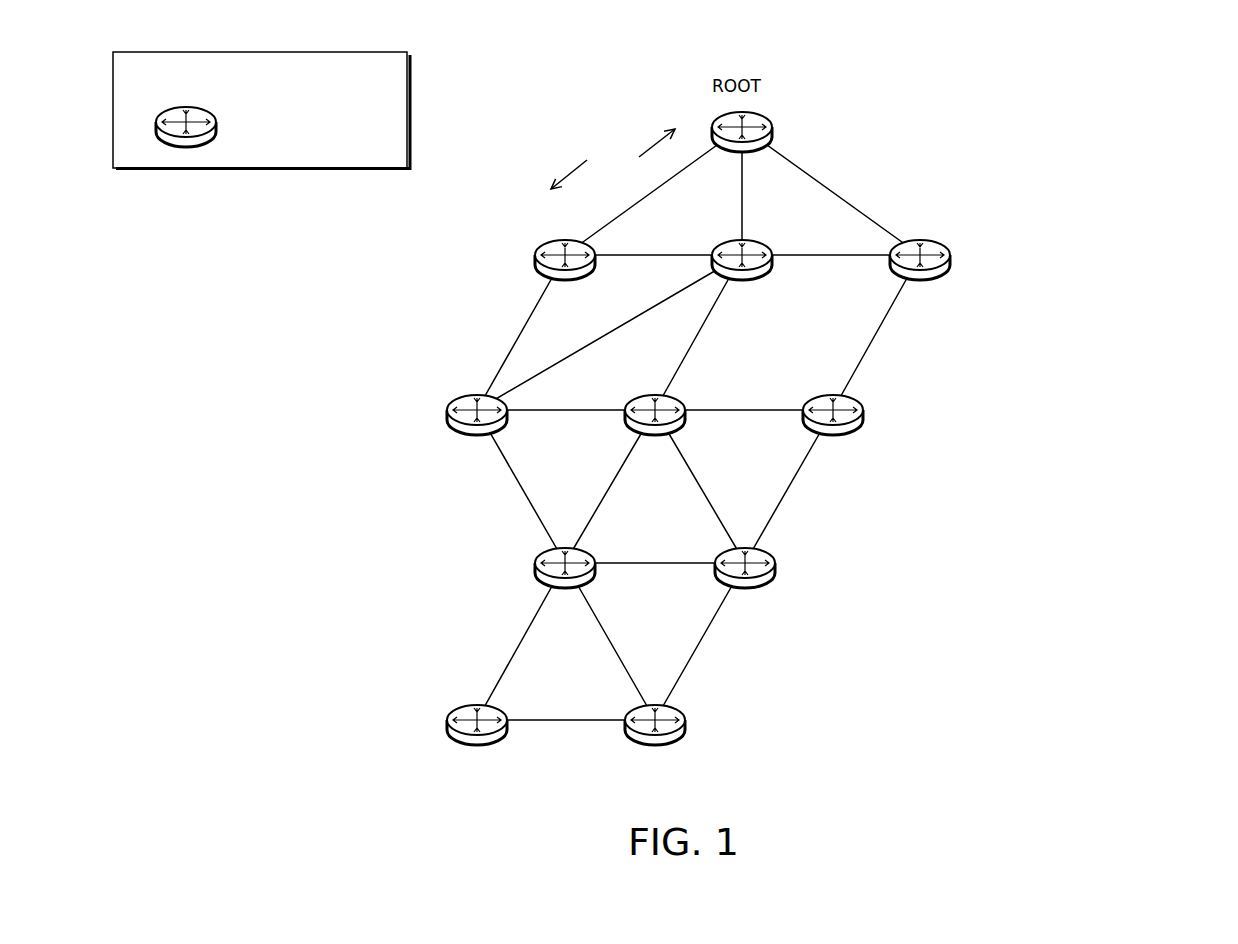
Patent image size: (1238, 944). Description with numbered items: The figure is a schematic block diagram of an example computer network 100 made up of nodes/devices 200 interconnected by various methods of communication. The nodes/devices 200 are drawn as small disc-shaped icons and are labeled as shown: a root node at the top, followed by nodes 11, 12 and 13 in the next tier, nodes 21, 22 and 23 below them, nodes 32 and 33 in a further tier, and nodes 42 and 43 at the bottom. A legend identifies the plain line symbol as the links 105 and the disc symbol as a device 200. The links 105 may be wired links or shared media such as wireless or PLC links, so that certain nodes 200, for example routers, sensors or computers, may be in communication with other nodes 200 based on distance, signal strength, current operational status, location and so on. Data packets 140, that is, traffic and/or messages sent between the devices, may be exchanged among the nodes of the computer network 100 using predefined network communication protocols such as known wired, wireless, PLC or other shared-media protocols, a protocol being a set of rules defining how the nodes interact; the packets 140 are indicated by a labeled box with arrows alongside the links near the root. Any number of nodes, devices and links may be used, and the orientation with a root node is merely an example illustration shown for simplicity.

The computer network 100 is at (1153, 106).
The links 105 is at (147, 82).
The data packets 140 is at (642, 143).
The nodes/devices 200 is at (257, 127).
The node 11 is at (565, 278).
The node 12 is at (742, 278).
The node 13 is at (920, 278).
The node 21 is at (477, 432).
The node 22 is at (655, 432).
The node 23 is at (833, 432).
The node 32 is at (565, 585).
The node 33 is at (745, 585).
The node 42 is at (477, 742).
The node 43 is at (655, 742).